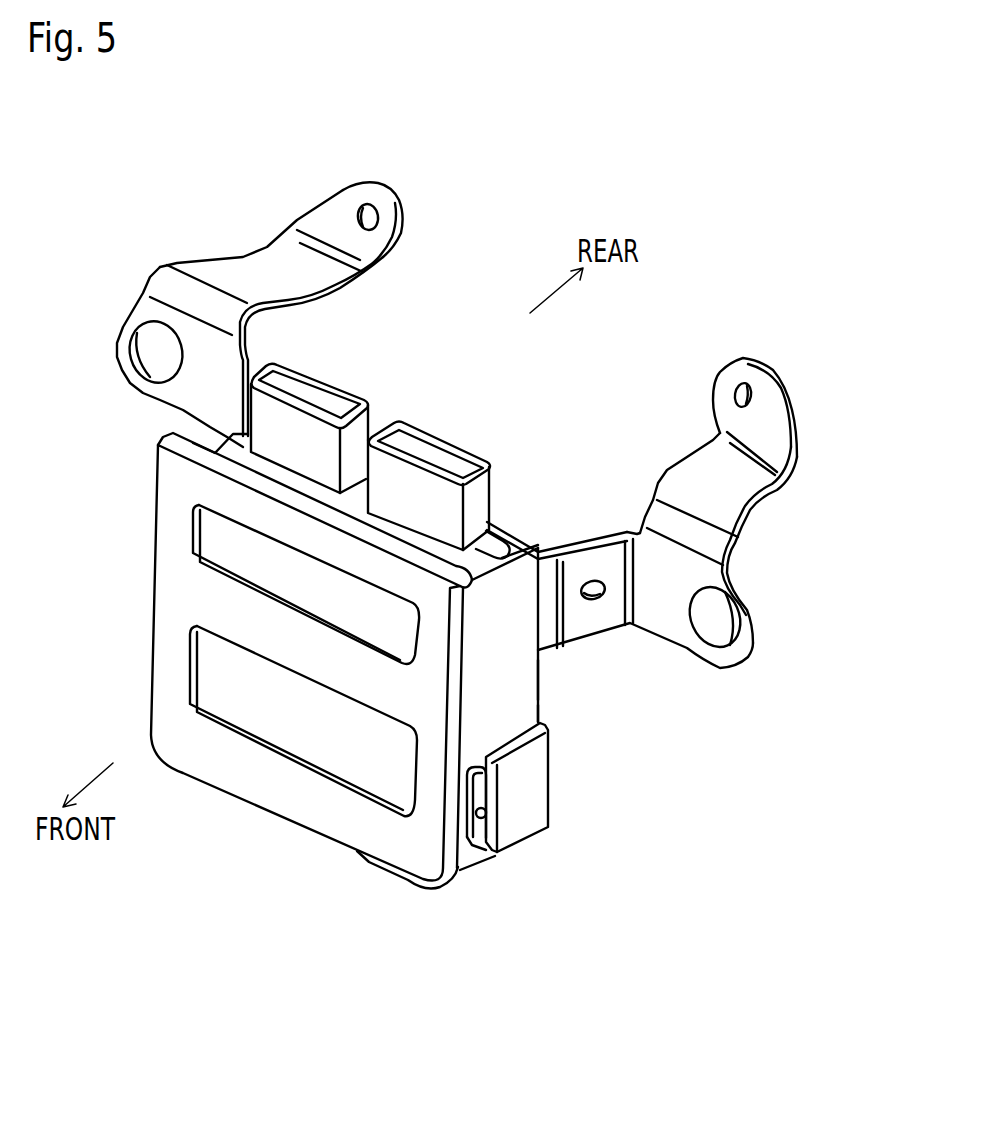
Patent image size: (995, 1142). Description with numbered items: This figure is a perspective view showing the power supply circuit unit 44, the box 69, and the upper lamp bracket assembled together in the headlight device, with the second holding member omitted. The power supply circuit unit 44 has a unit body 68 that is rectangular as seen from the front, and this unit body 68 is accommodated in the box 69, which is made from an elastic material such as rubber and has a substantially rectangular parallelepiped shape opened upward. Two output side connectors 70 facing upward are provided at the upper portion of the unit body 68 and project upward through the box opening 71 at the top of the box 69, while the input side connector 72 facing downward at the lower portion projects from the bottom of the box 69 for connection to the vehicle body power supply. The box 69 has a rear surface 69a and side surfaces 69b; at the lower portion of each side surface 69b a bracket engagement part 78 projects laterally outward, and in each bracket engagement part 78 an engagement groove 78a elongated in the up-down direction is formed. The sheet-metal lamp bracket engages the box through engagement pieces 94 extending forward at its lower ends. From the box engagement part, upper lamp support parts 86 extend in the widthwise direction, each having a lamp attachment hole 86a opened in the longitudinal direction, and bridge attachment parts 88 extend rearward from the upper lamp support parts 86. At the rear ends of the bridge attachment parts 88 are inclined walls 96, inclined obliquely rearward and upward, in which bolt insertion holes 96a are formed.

The power supply circuit unit 44 is at (483, 557).
The unit body 68 is at (250, 730).
The box 69 is at (293, 810).
The rear surface 69a is at (542, 684).
The side surfaces 69b is at (517, 703).
The output side connectors 70 is at (333, 408).
The box opening 71 is at (257, 482).
The input side connector 72 is at (433, 883).
The bracket engagement part 78 is at (527, 788).
The engagement groove 78a is at (490, 830).
The upper lamp support part 86 is at (183, 398).
The lamp attachment hole 86a is at (140, 375).
The bridge attachment part 88 is at (240, 268).
The engagement piece 94 is at (474, 833).
The inclined wall 96 is at (333, 207).
The bolt insertion hole 96a is at (380, 218).